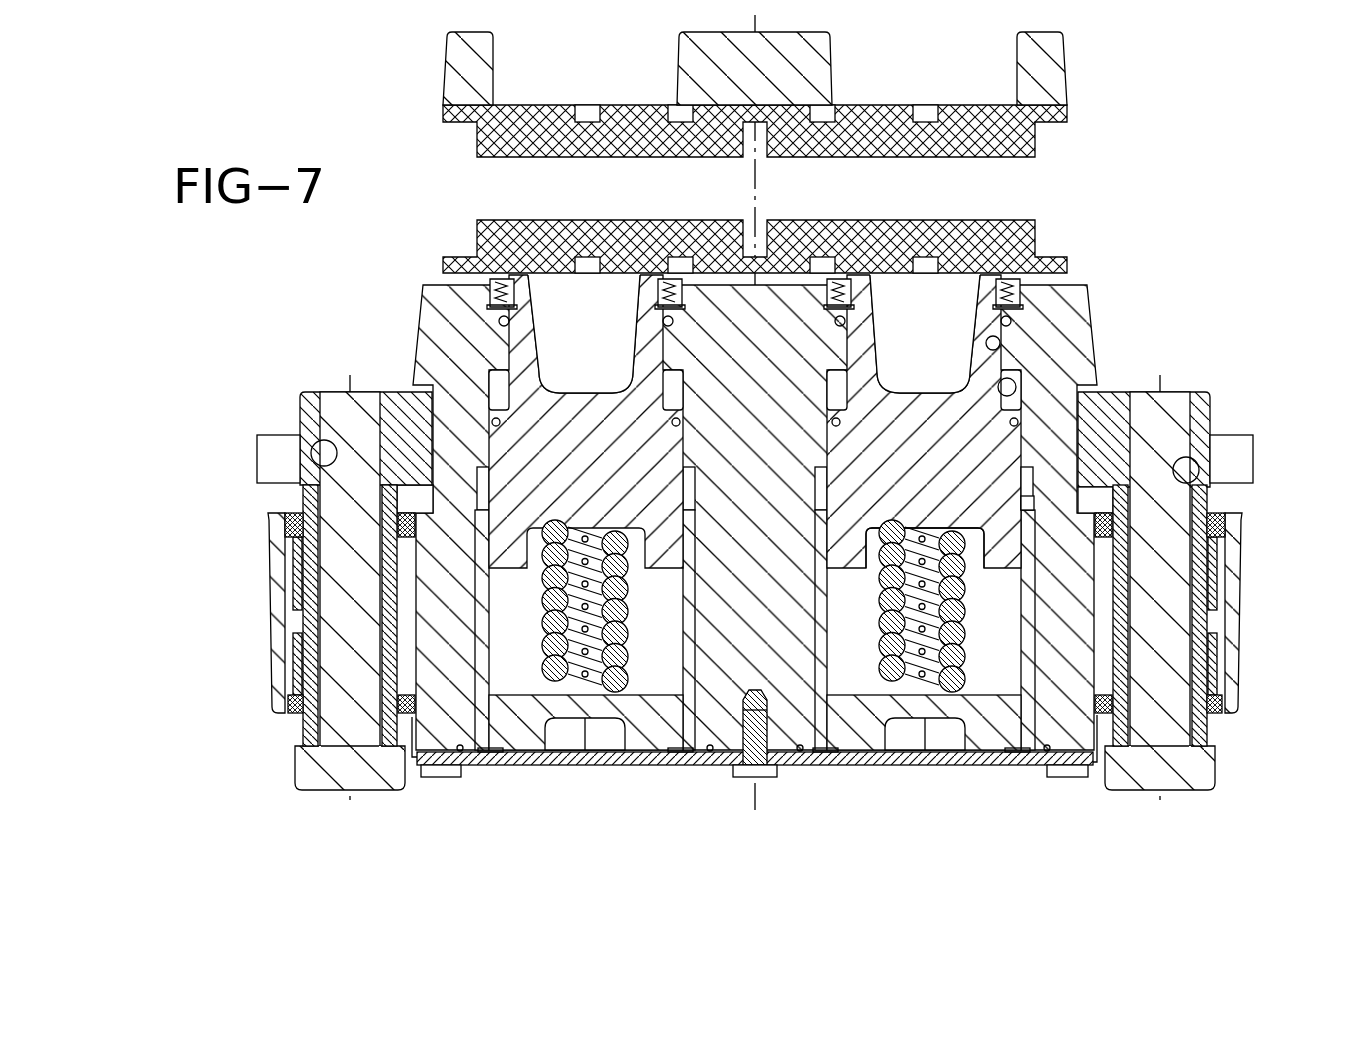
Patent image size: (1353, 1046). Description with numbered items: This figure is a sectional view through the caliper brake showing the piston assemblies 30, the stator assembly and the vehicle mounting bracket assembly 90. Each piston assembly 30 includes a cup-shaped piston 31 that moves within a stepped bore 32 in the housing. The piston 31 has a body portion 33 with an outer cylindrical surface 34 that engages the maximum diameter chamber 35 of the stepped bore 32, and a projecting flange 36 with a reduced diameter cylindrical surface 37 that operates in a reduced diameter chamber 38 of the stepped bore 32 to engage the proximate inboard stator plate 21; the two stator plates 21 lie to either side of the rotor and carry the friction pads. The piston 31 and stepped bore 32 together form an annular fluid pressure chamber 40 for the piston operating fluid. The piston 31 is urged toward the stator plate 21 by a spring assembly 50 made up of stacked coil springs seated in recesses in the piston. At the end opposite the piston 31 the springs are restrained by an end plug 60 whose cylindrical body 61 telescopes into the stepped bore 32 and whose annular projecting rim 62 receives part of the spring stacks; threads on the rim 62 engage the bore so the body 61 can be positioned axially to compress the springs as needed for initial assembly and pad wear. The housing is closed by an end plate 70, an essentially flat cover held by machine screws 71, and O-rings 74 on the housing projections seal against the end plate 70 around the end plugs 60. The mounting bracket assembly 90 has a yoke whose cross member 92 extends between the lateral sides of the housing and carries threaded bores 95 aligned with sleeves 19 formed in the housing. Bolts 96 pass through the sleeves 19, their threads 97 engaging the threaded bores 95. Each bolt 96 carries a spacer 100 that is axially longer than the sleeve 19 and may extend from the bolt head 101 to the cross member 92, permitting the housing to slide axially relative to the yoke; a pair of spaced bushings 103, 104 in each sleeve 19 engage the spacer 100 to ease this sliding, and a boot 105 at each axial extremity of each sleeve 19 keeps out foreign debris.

The sleeves 19 is at (276, 585).
The stator plates 21 is at (862, 110).
The piston assembly 30 is at (1028, 453).
The cup-shaped piston 31 is at (889, 442).
The stepped bore 32 is at (1012, 388).
The body portion 33 is at (939, 488).
The outer cylindrical surface 34 is at (1036, 530).
The maximum diameter chamber 35 is at (1034, 470).
The projecting flange 36 is at (990, 282).
The reduced diameter cylindrical surface 37 is at (1006, 405).
The reduced diameter chamber 38 is at (1000, 343).
The annular fluid pressure chamber 40 is at (838, 387).
The spring assembly 50 is at (982, 623).
The end plug 60 is at (905, 769).
The cylindrical body 61 is at (977, 740).
The annular projecting rim 62 is at (1034, 658).
The end plate 70 is at (590, 758).
The machine screws 71 is at (440, 770).
The O-rings 74 is at (708, 752).
The mounting bracket assembly 90 is at (266, 645).
The cross member 92 is at (1103, 397).
The threaded bores 95 is at (322, 413).
The bolts 96 is at (365, 718).
The threads 97 is at (311, 455).
The spacer 100 is at (302, 607).
The bolt head 101 is at (305, 782).
The bushing 103 is at (294, 548).
The bushing 104 is at (296, 652).
The boot 105 is at (290, 518).